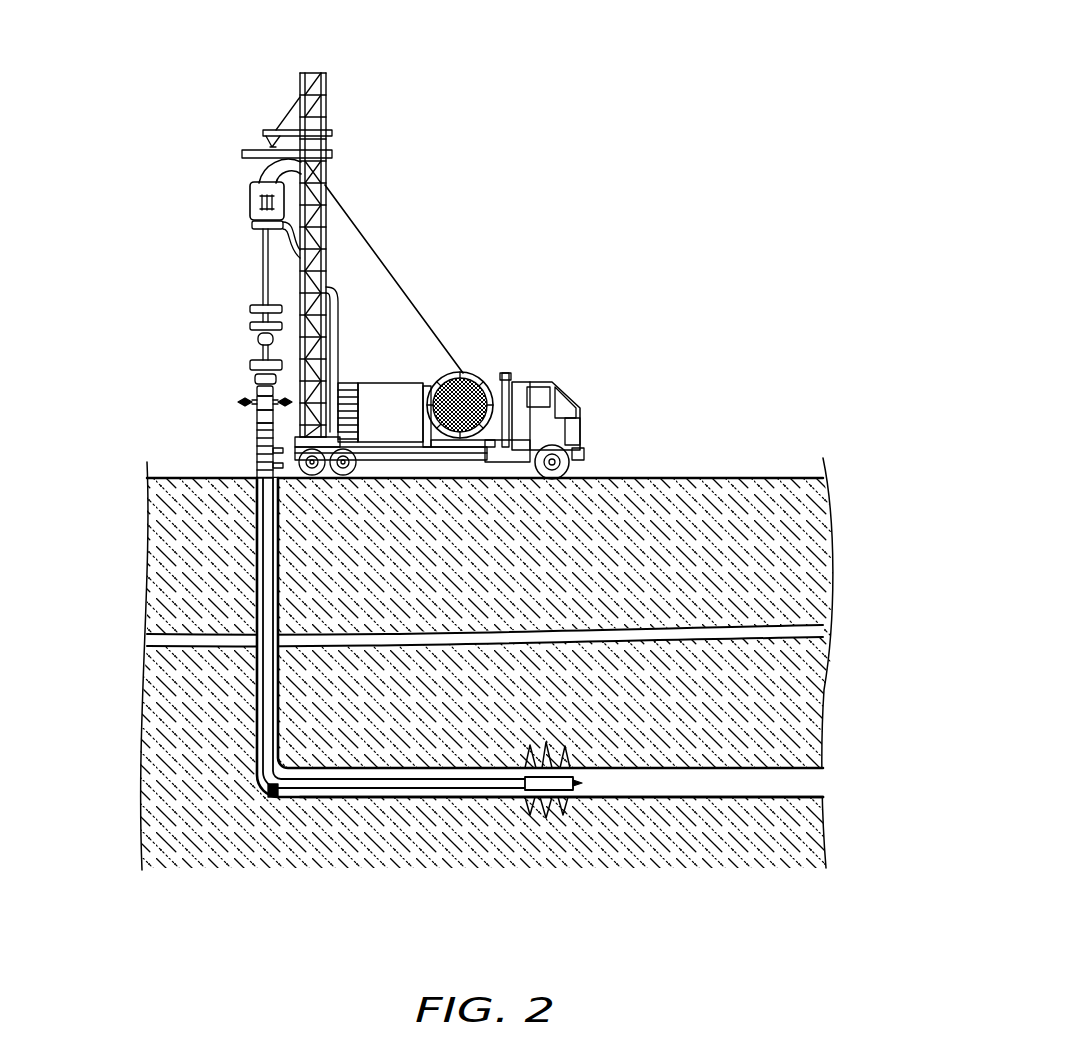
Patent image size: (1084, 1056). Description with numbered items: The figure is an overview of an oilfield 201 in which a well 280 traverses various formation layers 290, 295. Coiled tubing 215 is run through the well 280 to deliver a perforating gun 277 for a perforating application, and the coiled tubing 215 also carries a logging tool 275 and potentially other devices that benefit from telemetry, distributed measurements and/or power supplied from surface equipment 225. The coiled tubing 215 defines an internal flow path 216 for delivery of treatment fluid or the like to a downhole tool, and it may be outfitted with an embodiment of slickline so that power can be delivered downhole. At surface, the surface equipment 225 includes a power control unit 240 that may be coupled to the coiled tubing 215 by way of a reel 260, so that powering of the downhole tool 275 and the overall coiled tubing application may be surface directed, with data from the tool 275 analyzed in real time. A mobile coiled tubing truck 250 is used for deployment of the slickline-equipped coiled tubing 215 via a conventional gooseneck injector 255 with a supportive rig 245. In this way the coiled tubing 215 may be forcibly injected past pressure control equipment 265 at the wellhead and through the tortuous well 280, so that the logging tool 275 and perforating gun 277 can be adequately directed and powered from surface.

The oilfield 201 is at (693, 478).
The coiled tubing 215 is at (437, 338).
The internal flow path 216 is at (269, 798).
The surface equipment 225 is at (575, 172).
The power control unit 240 is at (393, 395).
The supportive rig 245 is at (306, 60).
The mobile coiled tubing truck 250 is at (541, 383).
The gooseneck injector 255 is at (232, 200).
The reel 260 is at (477, 373).
The pressure control equipment 265 is at (205, 345).
The logging tool 275 is at (445, 797).
The perforating gun 277 is at (584, 783).
The well 280 is at (255, 608).
The formation layer 290 is at (460, 560).
The formation layer 295 is at (430, 703).